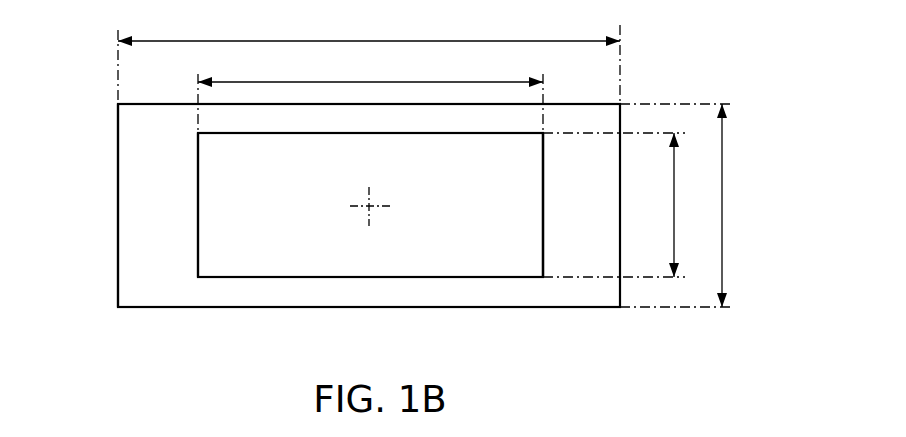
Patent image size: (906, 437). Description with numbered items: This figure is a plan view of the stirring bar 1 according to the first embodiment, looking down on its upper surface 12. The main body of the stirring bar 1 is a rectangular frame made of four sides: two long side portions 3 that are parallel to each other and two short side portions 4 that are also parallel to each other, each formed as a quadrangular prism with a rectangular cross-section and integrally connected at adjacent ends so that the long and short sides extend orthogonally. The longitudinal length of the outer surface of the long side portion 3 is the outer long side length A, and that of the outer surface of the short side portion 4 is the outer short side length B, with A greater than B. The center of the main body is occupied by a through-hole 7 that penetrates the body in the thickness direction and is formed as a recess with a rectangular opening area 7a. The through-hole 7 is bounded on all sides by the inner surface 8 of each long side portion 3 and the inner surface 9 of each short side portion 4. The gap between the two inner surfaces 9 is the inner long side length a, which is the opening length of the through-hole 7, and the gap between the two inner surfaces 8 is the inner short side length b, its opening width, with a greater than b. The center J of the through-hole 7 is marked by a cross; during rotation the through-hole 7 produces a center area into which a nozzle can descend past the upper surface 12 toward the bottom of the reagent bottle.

The stirring bar 1 is at (652, 75).
The long side portion 3 is at (250, 287).
The short side portion 4 is at (143, 180).
The through-hole 7 is at (413, 260).
The opening area 7a is at (488, 260).
The inner surface of the long side portion 8 is at (318, 135).
The inner surface of the short side portion 9 is at (200, 203).
The upper surface 12 is at (166, 282).
The center of the through-hole J is at (373, 197).
The outer long side length A is at (369, 52).
The inner long side length a is at (370, 92).
The outer short side length B is at (676, 205).
The inner short side length b is at (614, 205).